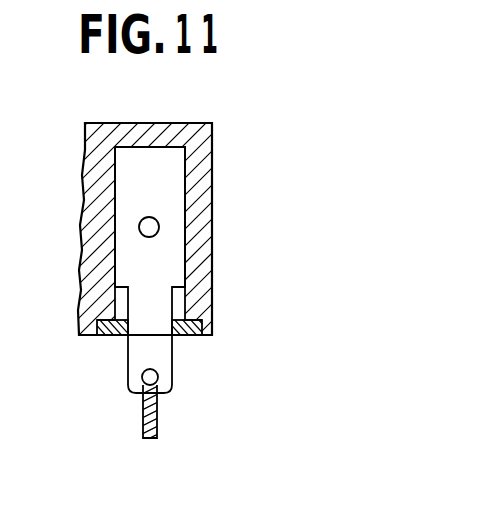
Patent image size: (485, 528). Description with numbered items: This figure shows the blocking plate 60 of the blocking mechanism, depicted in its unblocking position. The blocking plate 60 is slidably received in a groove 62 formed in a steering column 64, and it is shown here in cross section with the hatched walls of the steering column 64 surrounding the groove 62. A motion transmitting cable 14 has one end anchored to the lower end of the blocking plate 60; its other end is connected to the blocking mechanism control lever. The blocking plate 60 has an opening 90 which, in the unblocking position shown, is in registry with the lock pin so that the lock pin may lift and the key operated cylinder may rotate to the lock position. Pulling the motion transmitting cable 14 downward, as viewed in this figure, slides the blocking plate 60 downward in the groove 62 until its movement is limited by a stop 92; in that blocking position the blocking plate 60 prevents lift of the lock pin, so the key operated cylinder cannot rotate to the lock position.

The steering column 64 is at (207, 141).
The groove 62 is at (178, 172).
The blocking plate 60 is at (175, 283).
The opening 90 is at (159, 228).
The stop 92 is at (186, 337).
The motion transmitting cable 14 is at (157, 412).